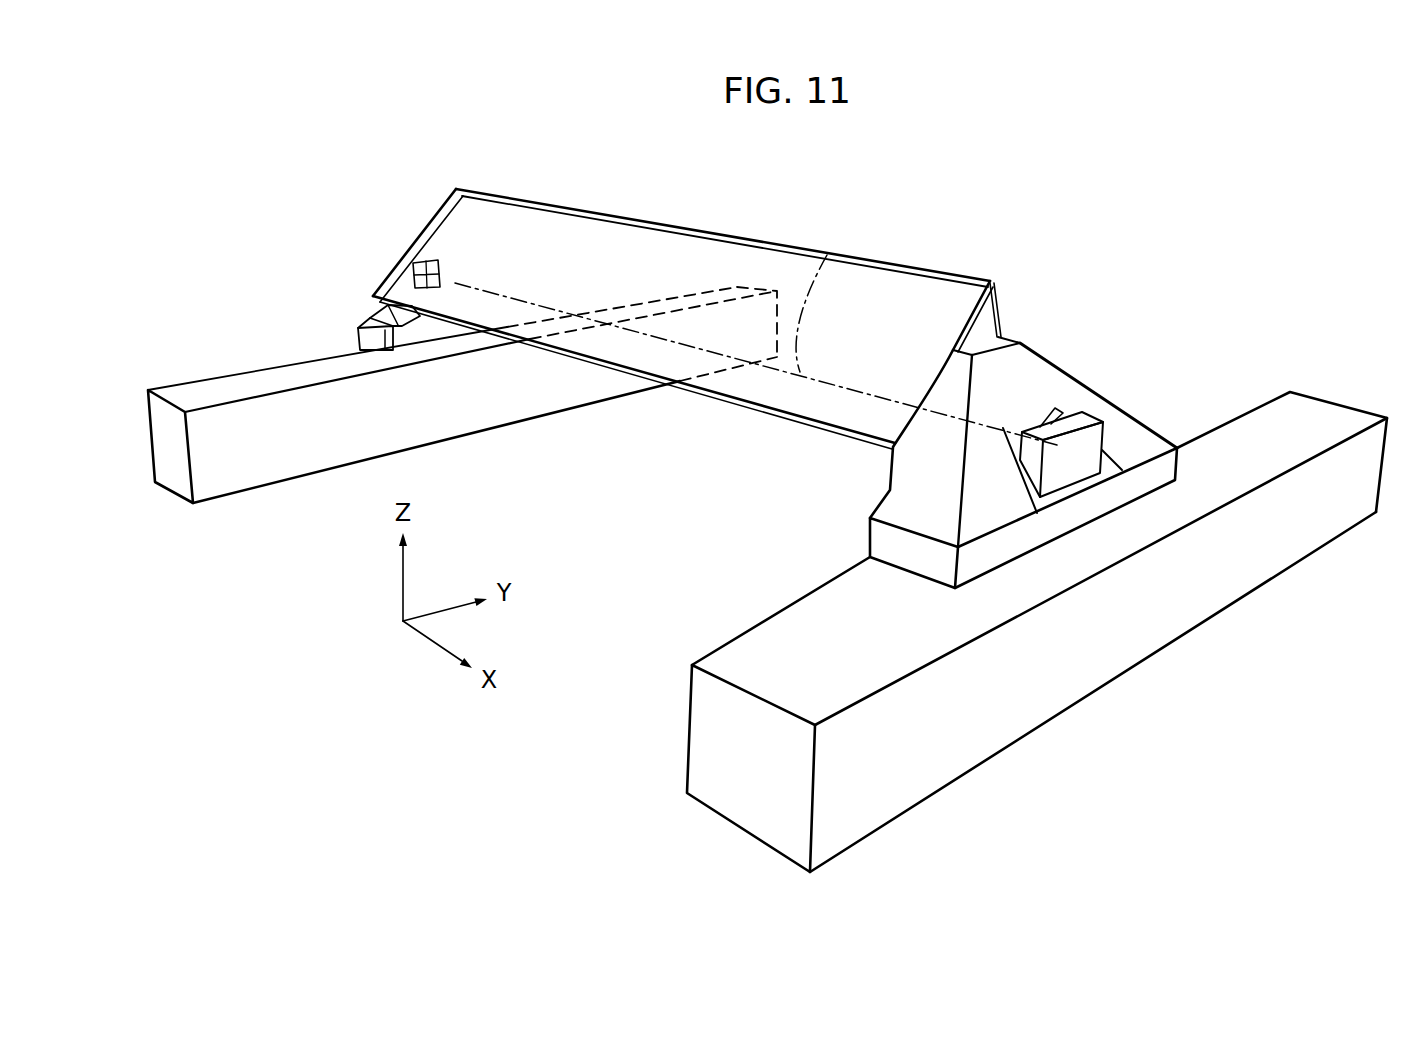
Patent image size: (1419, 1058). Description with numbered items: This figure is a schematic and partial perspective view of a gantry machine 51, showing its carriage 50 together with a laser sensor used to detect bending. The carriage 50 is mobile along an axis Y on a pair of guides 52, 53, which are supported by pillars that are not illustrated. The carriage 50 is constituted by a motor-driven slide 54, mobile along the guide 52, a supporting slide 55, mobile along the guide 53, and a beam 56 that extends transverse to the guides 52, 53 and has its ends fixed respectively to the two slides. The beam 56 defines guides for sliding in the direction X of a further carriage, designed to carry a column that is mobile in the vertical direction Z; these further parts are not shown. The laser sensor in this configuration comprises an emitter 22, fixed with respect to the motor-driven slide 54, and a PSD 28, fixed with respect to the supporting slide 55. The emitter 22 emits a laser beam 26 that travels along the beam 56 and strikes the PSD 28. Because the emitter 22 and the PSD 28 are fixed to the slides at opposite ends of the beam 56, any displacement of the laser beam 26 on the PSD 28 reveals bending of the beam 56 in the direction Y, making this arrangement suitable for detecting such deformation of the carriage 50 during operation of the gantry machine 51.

The laser emitter 22 is at (1107, 432).
The laser beam 26 is at (833, 243).
The PSD 28 is at (440, 262).
The carriage 50 is at (1035, 425).
The gantry machine 51 is at (632, 284).
The guide 52 is at (1274, 420).
The guide 53 is at (222, 385).
The motor-driven slide 54 is at (1055, 375).
The supporting slide 55 is at (418, 326).
The beam 56 is at (910, 283).